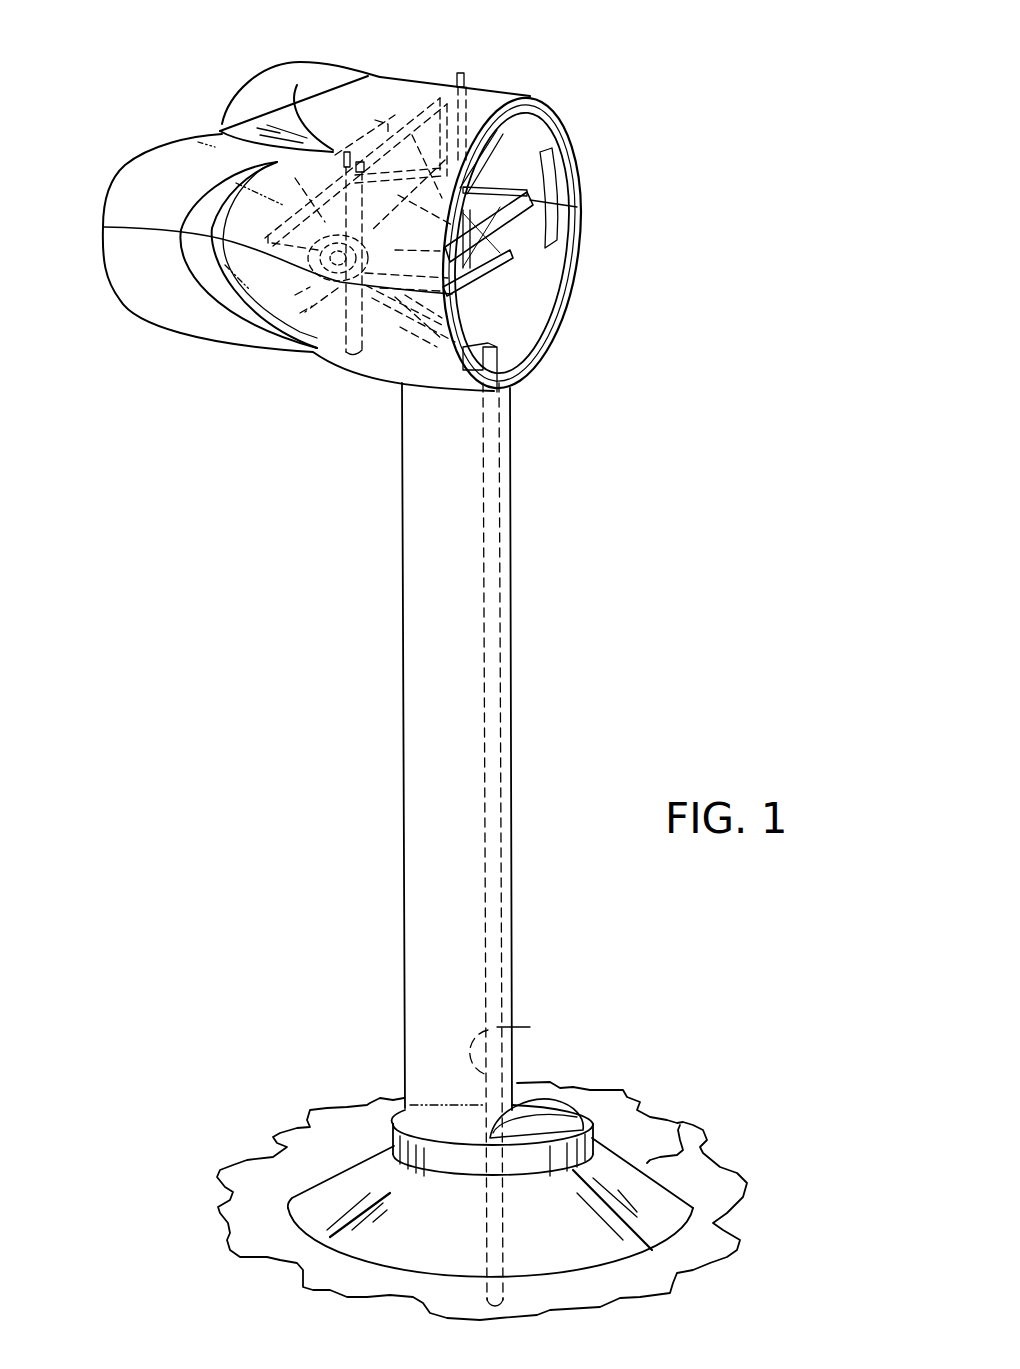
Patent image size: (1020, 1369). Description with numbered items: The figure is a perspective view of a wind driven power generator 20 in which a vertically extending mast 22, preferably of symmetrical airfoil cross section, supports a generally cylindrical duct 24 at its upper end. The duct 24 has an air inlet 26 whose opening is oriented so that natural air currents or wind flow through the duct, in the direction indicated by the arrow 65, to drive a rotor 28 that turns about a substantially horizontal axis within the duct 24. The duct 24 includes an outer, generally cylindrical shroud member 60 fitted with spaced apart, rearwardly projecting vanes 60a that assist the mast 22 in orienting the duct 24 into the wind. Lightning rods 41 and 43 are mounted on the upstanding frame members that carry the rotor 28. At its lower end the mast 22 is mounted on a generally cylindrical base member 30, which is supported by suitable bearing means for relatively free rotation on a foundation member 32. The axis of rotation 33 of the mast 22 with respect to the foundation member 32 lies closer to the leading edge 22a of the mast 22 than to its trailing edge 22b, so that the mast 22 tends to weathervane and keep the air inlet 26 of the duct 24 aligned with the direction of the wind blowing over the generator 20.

The wind driven power generator 20 is at (620, 387).
The mast 22 is at (450, 844).
The leading edge 22a is at (513, 928).
The trailing edge 22b is at (405, 993).
The duct 24 is at (530, 96).
The air inlet 26 is at (521, 348).
The rotor 28 is at (483, 288).
The base member 30 is at (605, 1092).
The foundation member 32 is at (681, 1125).
The axis of rotation 33 is at (530, 1030).
The lightning rod 41 is at (233, 120).
The lightning rod 43 is at (466, 78).
The outer shroud member 60 is at (410, 76).
The vanes 60a is at (242, 85).
The arrow indicating wind flow direction 65 is at (520, 230).